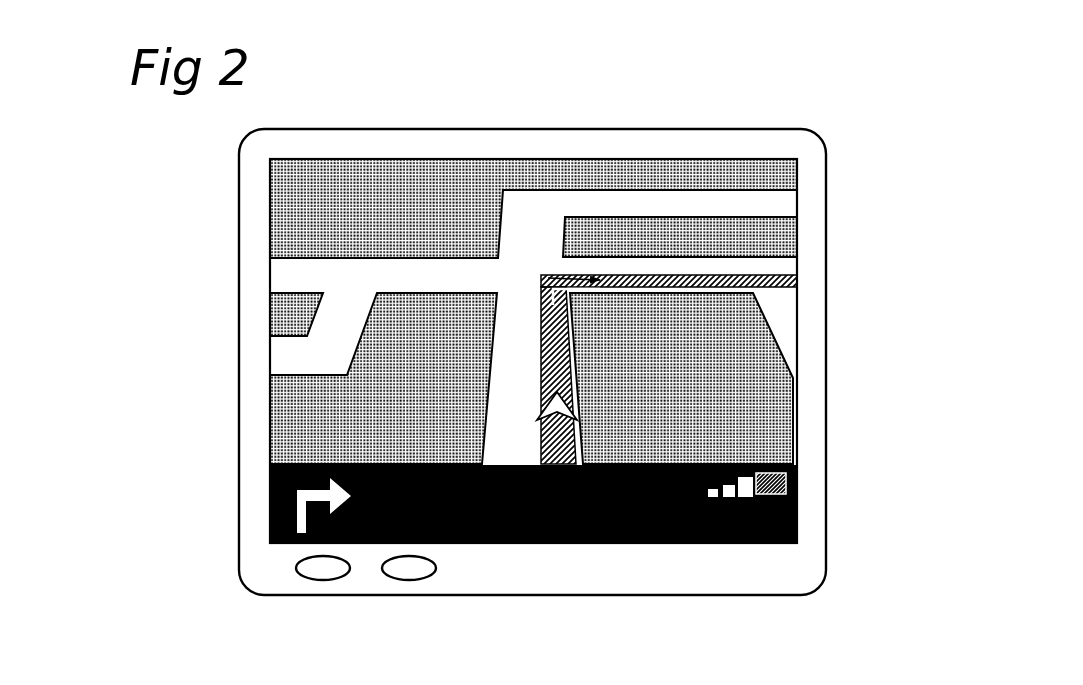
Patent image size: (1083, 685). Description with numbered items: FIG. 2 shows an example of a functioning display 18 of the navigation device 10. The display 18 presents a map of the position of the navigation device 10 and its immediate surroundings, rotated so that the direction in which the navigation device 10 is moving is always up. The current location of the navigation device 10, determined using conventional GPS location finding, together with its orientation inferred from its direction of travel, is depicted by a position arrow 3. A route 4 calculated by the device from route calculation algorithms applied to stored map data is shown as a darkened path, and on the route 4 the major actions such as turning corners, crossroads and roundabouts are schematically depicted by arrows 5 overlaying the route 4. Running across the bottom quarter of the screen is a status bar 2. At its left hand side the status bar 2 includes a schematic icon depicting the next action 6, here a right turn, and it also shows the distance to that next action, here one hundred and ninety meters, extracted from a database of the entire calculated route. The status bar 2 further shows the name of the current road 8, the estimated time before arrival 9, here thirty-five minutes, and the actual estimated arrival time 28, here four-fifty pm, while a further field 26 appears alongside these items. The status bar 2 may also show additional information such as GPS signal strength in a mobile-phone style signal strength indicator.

The navigation device 10 is at (836, 182).
The display 18 is at (737, 185).
The arrows 5 is at (536, 271).
The route 4 is at (558, 369).
The position arrow 3 is at (542, 406).
The next action 6 is at (262, 538).
The distance remaining field 26 is at (513, 478).
The estimated time before arrival 9 is at (513, 514).
The current road 8 is at (608, 545).
The actual estimated arrival time 28 is at (676, 511).
The status bar 2 is at (805, 489).